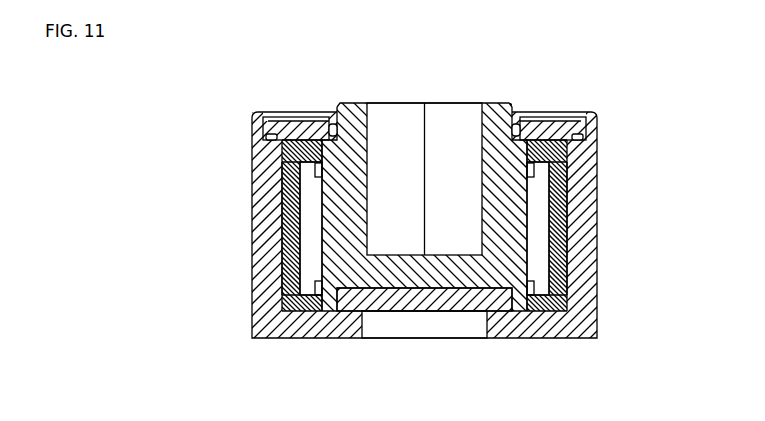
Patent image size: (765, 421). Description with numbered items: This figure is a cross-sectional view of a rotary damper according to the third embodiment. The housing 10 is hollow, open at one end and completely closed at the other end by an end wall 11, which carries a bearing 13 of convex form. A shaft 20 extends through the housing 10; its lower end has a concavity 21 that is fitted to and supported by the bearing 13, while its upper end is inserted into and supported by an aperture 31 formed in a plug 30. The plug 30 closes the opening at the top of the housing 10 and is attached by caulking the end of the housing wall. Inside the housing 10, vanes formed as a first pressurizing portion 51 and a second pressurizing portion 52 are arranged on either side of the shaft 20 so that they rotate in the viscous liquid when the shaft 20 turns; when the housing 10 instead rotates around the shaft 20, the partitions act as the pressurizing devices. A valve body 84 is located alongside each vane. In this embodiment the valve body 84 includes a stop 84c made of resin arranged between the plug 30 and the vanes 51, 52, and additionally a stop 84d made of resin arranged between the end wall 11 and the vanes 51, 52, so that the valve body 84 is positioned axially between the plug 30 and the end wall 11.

The housing 10 is at (260, 243).
The end wall 11 is at (513, 326).
The bearing 13 is at (419, 322).
The shaft 20 is at (492, 108).
The concavity 21 is at (441, 296).
The plug 30 is at (563, 123).
The aperture 31 is at (334, 126).
The vane (first pressurizing portion) 51 is at (541, 240).
The vane (second pressurizing portion) 52 is at (309, 245).
The valve body 84 is at (287, 200).
The stop 84c is at (303, 145).
The stop 84d is at (313, 312).